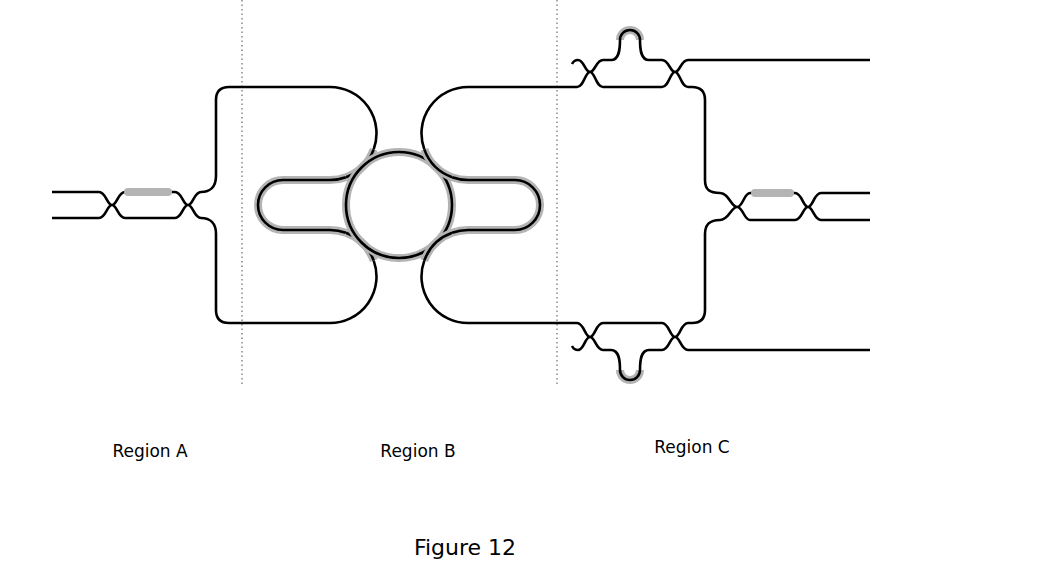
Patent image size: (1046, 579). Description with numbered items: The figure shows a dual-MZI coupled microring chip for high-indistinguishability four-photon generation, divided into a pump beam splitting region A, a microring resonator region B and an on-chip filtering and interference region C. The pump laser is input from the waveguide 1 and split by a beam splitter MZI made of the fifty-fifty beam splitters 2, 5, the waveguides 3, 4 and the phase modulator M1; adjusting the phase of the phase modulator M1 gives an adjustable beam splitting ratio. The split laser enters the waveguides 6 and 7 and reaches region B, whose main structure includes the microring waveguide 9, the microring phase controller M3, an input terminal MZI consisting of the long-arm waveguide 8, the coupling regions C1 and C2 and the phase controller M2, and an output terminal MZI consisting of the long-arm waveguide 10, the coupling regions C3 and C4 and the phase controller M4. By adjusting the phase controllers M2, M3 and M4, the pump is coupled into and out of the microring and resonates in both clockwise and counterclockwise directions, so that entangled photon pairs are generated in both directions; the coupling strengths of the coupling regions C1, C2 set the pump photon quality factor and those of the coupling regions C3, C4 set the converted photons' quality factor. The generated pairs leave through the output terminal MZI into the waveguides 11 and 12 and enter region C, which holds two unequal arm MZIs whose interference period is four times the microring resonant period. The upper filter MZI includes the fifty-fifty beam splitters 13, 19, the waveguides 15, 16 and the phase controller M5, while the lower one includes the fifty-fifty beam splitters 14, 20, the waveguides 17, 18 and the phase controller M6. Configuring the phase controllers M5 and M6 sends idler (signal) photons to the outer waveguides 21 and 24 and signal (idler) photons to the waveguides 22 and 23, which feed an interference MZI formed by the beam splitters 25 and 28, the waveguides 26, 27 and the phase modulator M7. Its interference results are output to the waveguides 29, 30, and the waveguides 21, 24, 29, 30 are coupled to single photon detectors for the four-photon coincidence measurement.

The waveguide 1 is at (88, 192).
The 50:50 beam splitter 2 is at (110, 203).
The waveguide 3 is at (127, 192).
The waveguide 4 is at (137, 218).
The 50:50 beam splitter 5 is at (187, 207).
The phase modulator M1 is at (158, 192).
The waveguide 6 is at (273, 323).
The waveguide 7 is at (267, 87).
The long-arm waveguide 8 is at (328, 180).
The microring waveguide 9 is at (399, 152).
The long-arm waveguide 10 is at (463, 230).
The waveguide 11 is at (487, 87).
The waveguide 12 is at (487, 323).
The coupling region C1 is at (360, 163).
The coupling region C2 is at (360, 244).
The coupling region C3 is at (438, 163).
The coupling region C4 is at (438, 248).
The phase controller M2 is at (288, 180).
The microring phase controller M3 is at (399, 262).
The phase controller M4 is at (510, 180).
The 50:50 beam splitter 13 is at (590, 74).
The 50:50 beam splitter 14 is at (590, 335).
The waveguide 15 is at (608, 60).
The waveguide 16 is at (617, 87).
The waveguide 17 is at (630, 323).
The waveguide 18 is at (658, 350).
The 50:50 beam splitter 19 is at (675, 74).
The 50:50 beam splitter 20 is at (675, 335).
The waveguide 21 is at (753, 60).
The waveguide 22 is at (705, 163).
The waveguide 23 is at (705, 253).
The waveguide 24 is at (763, 350).
The beam splitter 25 is at (737, 209).
The waveguide 26 is at (747, 193).
The waveguide 27 is at (778, 220).
The beam splitter 28 is at (808, 209).
The waveguide 29 is at (847, 193).
The waveguide 30 is at (850, 220).
The phase controller M5 is at (630, 32).
The phase controller M6 is at (630, 378).
The phase modulator M7 is at (772, 193).